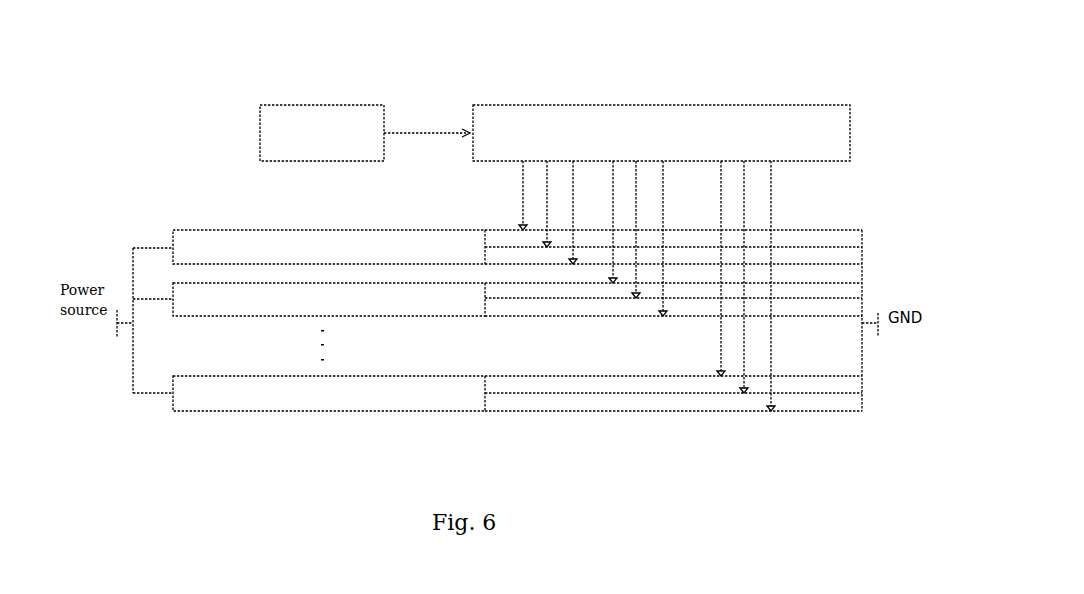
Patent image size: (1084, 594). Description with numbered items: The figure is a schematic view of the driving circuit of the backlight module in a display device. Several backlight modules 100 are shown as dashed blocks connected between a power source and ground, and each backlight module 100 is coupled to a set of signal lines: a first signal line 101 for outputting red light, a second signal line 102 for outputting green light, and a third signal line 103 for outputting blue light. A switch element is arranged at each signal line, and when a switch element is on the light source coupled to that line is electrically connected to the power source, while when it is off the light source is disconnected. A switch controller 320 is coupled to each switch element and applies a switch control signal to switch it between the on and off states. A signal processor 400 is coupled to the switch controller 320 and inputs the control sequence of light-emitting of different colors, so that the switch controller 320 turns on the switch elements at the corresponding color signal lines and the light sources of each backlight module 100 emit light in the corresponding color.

The backlight module 100 is at (252, 232).
The first signal line 101 is at (536, 372).
The second signal line 102 is at (575, 390).
The third signal line 103 is at (621, 406).
The switch controller 320 is at (687, 120).
The signal processor 400 is at (316, 128).